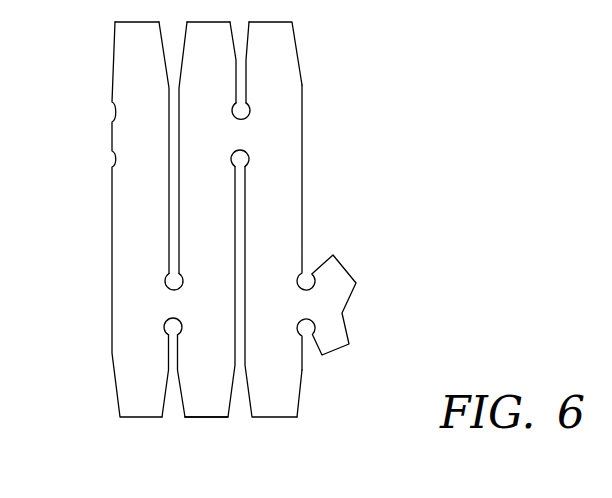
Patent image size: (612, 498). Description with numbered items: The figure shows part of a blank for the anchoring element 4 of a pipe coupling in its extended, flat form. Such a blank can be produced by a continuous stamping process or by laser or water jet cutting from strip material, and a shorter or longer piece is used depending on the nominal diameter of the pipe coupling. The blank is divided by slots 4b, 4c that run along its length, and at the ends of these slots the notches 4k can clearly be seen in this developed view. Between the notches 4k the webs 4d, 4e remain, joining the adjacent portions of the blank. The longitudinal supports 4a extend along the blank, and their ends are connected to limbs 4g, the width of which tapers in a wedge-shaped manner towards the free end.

The anchoring element 4 is at (112, 185).
The longitudinal support 4a is at (267, 215).
The slot 4b is at (172, 150).
The slot 4c is at (170, 395).
The web 4d is at (177, 302).
The web 4e is at (243, 135).
The limb 4g is at (265, 63).
The notch 4k is at (166, 283).